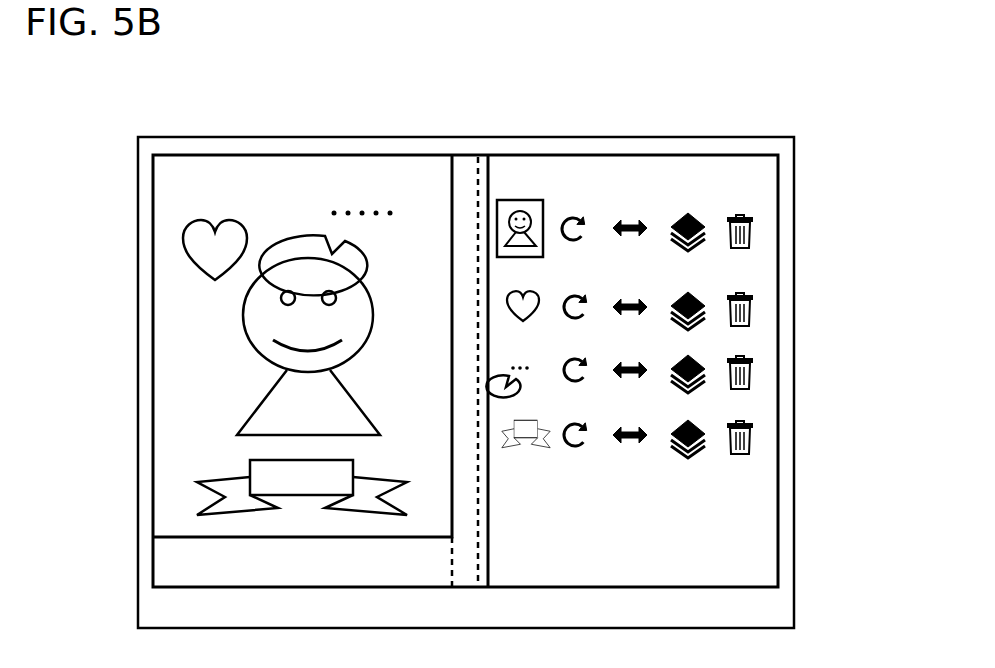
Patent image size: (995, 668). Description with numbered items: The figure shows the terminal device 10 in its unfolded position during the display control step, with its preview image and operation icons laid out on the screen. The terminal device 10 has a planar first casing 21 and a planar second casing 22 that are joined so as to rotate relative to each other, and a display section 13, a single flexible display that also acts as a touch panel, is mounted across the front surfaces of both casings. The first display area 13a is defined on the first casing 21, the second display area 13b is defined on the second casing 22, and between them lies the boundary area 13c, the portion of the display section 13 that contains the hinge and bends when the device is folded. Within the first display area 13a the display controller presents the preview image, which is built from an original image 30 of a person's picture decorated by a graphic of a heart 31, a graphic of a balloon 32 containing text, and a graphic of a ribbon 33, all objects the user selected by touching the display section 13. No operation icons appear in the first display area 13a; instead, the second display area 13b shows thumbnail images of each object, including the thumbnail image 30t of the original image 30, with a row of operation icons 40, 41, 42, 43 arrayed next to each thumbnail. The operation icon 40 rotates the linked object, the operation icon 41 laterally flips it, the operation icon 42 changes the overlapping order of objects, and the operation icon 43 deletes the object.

The terminal device 10 is at (452, 85).
The display section 13 is at (215, 155).
The first display area 13a is at (242, 170).
The second display area 13b is at (763, 187).
The boundary area 13c is at (463, 173).
The first casing 21 is at (145, 147).
The second casing 22 is at (787, 437).
The original image 30 is at (173, 345).
The thumbnail image 30t is at (530, 200).
The graphic of a heart 31 is at (183, 245).
The graphic of a balloon 32 is at (357, 182).
The graphic of a ribbon 33 is at (200, 482).
The operation icon 40 is at (573, 218).
The operation icon 41 is at (630, 220).
The operation icon 42 is at (688, 213).
The operation icon 43 is at (737, 214).